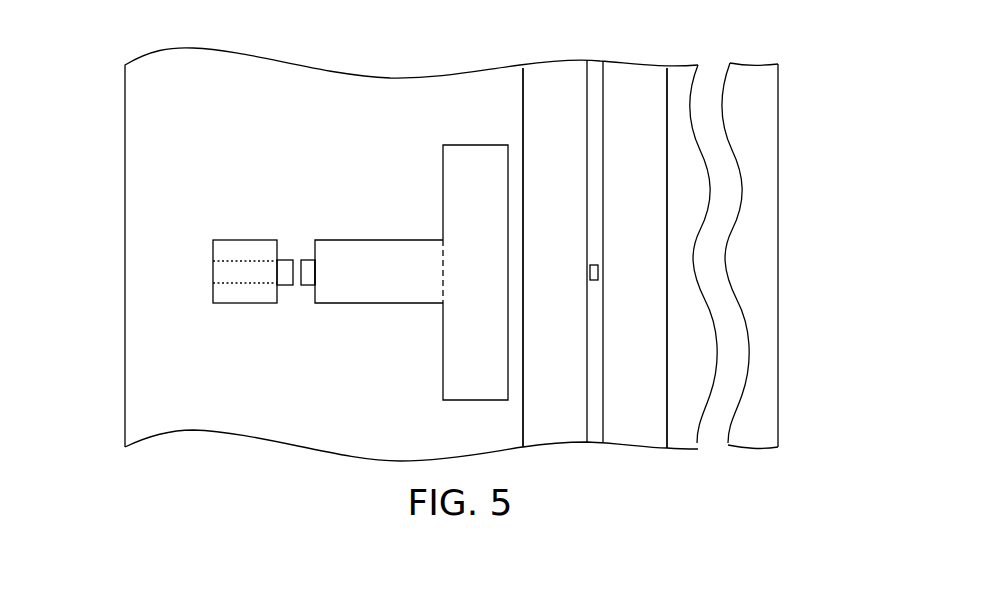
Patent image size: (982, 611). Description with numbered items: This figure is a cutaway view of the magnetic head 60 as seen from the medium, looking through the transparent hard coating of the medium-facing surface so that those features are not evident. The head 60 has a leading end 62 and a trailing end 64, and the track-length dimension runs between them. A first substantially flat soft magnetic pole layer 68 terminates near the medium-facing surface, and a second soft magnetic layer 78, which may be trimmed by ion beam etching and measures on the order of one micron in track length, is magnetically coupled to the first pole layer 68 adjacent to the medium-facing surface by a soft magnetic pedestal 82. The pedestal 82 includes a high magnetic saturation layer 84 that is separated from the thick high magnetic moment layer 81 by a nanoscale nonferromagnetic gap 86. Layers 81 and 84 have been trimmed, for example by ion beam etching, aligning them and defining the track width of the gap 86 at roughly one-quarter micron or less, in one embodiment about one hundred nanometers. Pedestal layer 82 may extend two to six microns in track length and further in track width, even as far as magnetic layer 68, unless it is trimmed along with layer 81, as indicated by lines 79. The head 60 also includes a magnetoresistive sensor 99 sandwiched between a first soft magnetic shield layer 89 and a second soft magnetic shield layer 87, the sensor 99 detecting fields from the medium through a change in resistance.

The head 60 is at (152, 468).
The leading end 62 is at (790, 345).
The trailing end 64 is at (114, 257).
The first soft magnetic pole layer 68 is at (443, 192).
The second soft magnetic layer 78 is at (247, 240).
The lines 79 is at (227, 260).
The high magnetic moment layer 81 is at (286, 285).
The soft magnetic pedestal 82 is at (378, 303).
The high magnetic saturation layer 84 is at (305, 260).
The nanoscale nonferromagnetic gap 86 is at (304, 268).
The second soft magnetic shield layer 87 is at (667, 258).
The first soft magnetic shield layer 89 is at (523, 110).
The magnetoresistive sensor 99 is at (590, 275).